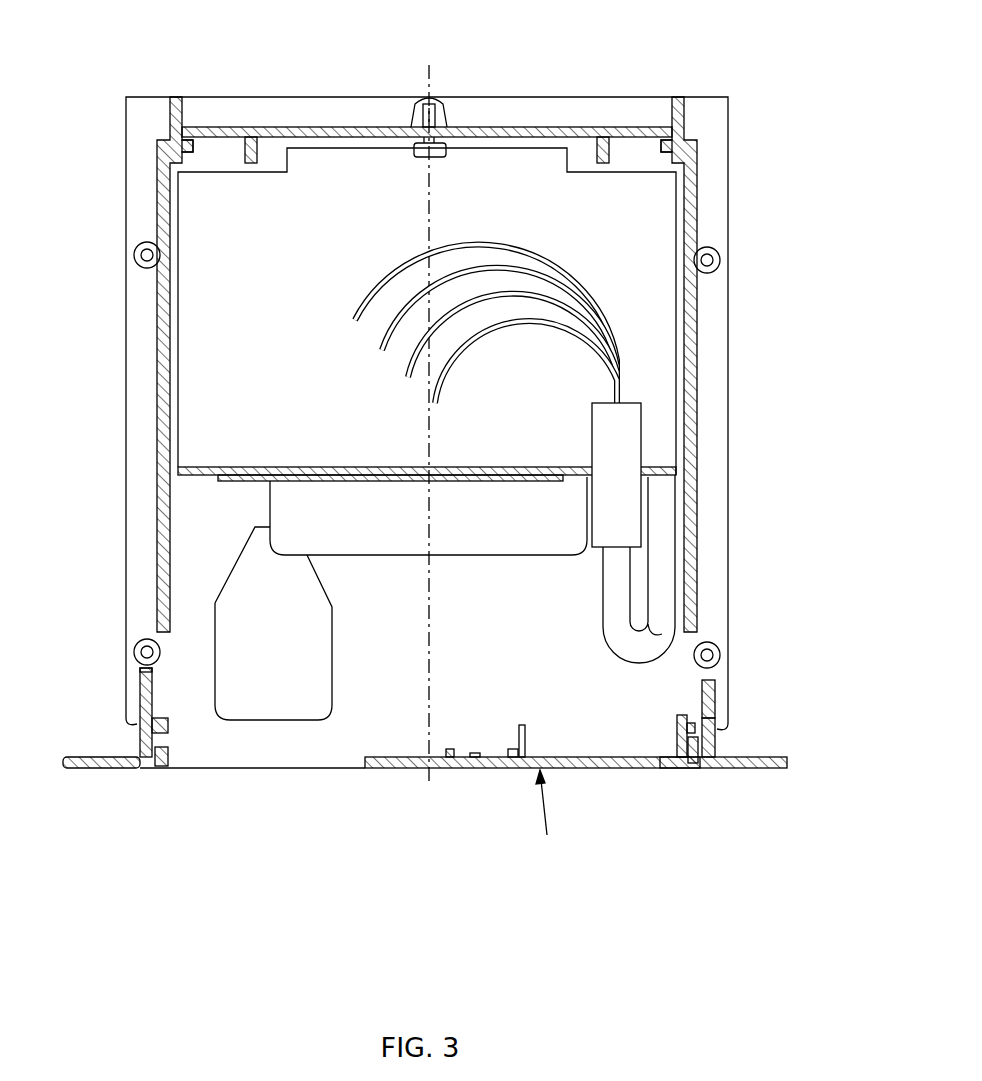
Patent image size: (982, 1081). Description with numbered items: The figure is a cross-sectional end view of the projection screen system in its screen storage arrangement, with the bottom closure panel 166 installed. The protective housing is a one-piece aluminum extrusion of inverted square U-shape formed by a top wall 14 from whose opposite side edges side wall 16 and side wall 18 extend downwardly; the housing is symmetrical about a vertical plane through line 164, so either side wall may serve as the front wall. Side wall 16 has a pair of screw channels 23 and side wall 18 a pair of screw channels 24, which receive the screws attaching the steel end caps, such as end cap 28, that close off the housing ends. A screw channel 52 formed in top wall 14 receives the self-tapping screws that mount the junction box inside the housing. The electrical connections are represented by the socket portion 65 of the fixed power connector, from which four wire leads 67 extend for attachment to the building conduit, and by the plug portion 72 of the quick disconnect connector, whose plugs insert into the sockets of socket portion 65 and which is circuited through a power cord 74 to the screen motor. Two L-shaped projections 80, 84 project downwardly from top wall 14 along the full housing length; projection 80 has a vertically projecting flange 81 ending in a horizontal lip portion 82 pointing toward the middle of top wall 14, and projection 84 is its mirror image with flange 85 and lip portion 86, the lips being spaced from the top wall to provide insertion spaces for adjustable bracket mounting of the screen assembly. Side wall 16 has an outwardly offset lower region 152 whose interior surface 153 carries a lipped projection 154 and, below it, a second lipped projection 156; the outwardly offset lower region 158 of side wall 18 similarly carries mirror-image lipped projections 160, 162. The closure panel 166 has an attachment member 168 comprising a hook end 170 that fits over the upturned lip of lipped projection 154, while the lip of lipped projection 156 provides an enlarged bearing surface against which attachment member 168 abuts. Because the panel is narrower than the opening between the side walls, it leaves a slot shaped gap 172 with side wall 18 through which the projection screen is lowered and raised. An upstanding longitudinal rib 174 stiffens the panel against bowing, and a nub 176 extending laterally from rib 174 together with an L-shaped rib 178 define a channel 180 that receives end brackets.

The top wall 14 is at (312, 132).
The side wall 16 is at (695, 372).
The side wall 18 is at (162, 397).
The screw channels 23 is at (712, 270).
The screw channels 24 is at (138, 238).
The end cap 28 is at (705, 125).
The screw channel 52 is at (445, 100).
The socket portion 65 is at (610, 437).
The wire leads 67 is at (380, 285).
The plug portion 72 is at (617, 518).
The power cord 74 is at (618, 595).
The L-shaped projection 80 is at (663, 140).
The flange 81 is at (613, 147).
The lip portion 82 is at (585, 160).
The L-shaped projection 84 is at (233, 155).
The flange 85 is at (250, 145).
The lip portion 86 is at (267, 160).
The outwardly offset lower region 152 is at (707, 713).
The interior surface 153 is at (713, 687).
The lipped projection 154 is at (697, 737).
The lipped projection 156 is at (695, 763).
The outwardly offset lower region 158 is at (150, 717).
The lipped projection 160 is at (170, 727).
The lipped projection 162 is at (165, 760).
The line 164 is at (425, 435).
The bottom closure panel 166 is at (548, 822).
The attachment member 168 is at (675, 742).
The hook end 170 is at (695, 722).
The slot shaped gap 172 is at (272, 766).
The longitudinal rib 174 is at (522, 725).
The nub 176 is at (512, 747).
The L-shaped rib 178 is at (448, 748).
The channel 180 is at (475, 753).